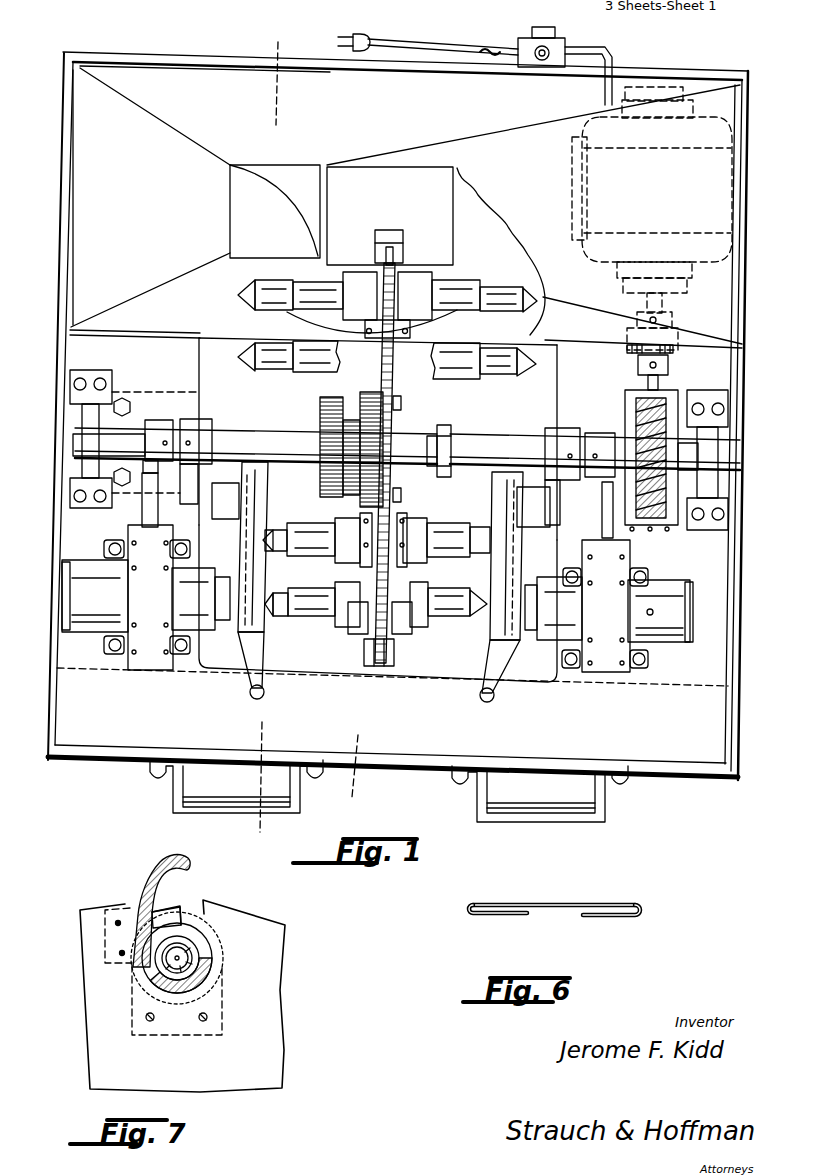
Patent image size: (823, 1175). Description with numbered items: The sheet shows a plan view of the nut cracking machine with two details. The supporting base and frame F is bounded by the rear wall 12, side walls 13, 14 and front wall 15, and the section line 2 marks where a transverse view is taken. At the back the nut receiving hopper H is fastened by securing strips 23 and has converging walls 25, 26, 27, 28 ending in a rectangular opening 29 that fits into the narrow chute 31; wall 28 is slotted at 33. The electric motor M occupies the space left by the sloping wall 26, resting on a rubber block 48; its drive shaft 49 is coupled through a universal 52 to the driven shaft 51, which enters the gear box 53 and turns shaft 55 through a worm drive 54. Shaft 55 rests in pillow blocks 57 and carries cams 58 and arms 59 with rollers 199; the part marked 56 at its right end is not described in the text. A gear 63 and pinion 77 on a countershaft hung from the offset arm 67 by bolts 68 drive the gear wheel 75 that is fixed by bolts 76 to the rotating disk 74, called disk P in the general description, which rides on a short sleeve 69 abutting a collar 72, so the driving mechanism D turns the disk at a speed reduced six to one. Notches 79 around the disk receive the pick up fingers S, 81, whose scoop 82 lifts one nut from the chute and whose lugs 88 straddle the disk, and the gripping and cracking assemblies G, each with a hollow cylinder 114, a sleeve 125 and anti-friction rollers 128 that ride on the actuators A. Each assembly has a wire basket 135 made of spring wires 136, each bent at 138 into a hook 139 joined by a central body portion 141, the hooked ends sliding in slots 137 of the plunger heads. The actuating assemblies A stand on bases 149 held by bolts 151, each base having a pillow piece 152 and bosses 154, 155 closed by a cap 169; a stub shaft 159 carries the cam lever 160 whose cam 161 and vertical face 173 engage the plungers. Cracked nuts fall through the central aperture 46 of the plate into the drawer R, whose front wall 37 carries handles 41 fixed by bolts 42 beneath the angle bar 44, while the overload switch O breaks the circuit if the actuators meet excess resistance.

In FIG. 1, the rear wall 12 is at (225, 60).
In FIG. 1, the side wall 13 is at (745, 337).
In FIG. 1, the side wall 14 is at (62, 338).
In FIG. 1, the front wall 15 is at (470, 761).
In FIG. 1, the supporting base and frame F is at (58, 188).
In FIG. 1, the section line 2- 2 is at (292, 45).
In FIG. 1, the securing strips 23 is at (198, 66).
In FIG. 1, the converging wall 25 is at (432, 116).
In FIG. 1, the converging wall 26 is at (537, 189).
In FIG. 1, the converging wall 27 is at (140, 200).
In FIG. 1, the converging wall 28 is at (195, 314).
In FIG. 1, the rectangular opening 29 is at (230, 234).
In FIG. 1, the chute 31 is at (305, 194).
In FIG. 1, the nut receiving hopper H is at (355, 117).
In FIG. 1, the electric motor M is at (620, 230).
In FIG. 1, the rubber block 48 is at (572, 226).
In FIG. 1, the drive shaft 49 is at (648, 303).
In FIG. 1, the overload switch O is at (568, 46).
In FIG. 1, the slot 33 is at (404, 254).
In FIG. 1, the pick up fingers S is at (386, 231).
In FIG. 1, the pick up fingers 81 is at (400, 244).
In FIG. 7, the pick up fingers 81 is at (165, 888).
In FIG. 1, the rotating disk 74 is at (385, 382).
In FIG. 7, the rotating disk 74 is at (288, 921).
In FIG. 1, the hollow cylinder 114 is at (318, 288).
In FIG. 7, the hollow cylinder 114 is at (192, 900).
In FIG. 1, the anti-friction rollers 128 is at (240, 303).
In FIG. 1, the sleeve 125 is at (510, 315).
In FIG. 1, the gripping and cracking assemblies G is at (268, 300).
In FIG. 1, the bolts 76 is at (398, 403).
In FIG. 1, the gear 63 is at (320, 474).
In FIG. 1, the pinion 77 is at (345, 440).
In FIG. 1, the gear wheel 75 is at (360, 393).
In FIG. 1, the rotating disk P is at (397, 420).
In FIG. 1, the offset arm 67 is at (252, 406).
In FIG. 1, the shaft 55 is at (506, 440).
In FIG. 1, the hopper R is at (220, 387).
In FIG. 1, the collar 72 is at (449, 435).
In FIG. 1, the short sleeve 69 is at (445, 478).
In FIG. 1, the driving mechanism D is at (534, 440).
In FIG. 1, the pillow block 57 is at (70, 404).
In FIG. 1, the bolts 68 is at (123, 398).
In FIG. 1, the cams 58 is at (157, 420).
In FIG. 1, the shaft journal 56 is at (85, 438).
In FIG. 1, the arms 59 is at (203, 478).
In FIG. 1, the roller 199 is at (224, 488).
In FIG. 1, the stub shaft 159 is at (226, 576).
In FIG. 1, the cam lever 160 is at (270, 640).
In FIG. 1, the cam 161 is at (246, 640).
In FIG. 1, the vertical face 173 is at (266, 565).
In FIG. 1, the central aperture 46 is at (314, 672).
In FIG. 1, the actuating means A is at (369, 625).
In FIG. 1, the bolts 151 is at (592, 568).
In FIG. 1, the bases 149 is at (104, 553).
In FIG. 1, the pillow pieces 152 is at (650, 659).
In FIG. 1, the boss 154 is at (64, 581).
In FIG. 1, the boss 155 is at (180, 592).
In FIG. 1, the closure plug or cap 169 is at (62, 600).
In FIG. 1, the gear box 53 is at (627, 425).
In FIG. 1, the universal 52 is at (628, 352).
In FIG. 1, the driven shaft 51 is at (668, 372).
In FIG. 1, the worm drive 54 is at (656, 530).
In FIG. 1, the handles 41 is at (198, 814).
In FIG. 1, the bolts 42 is at (157, 781).
In FIG. 1, the angle bar 44 is at (347, 775).
In FIG. 1, the front wall 37 is at (390, 770).
In FIG. 6, the central body portion 141 is at (548, 903).
In FIG. 6, the bend 138 is at (469, 908).
In FIG. 6, the spring wires 136 is at (593, 902).
In FIG. 6, the hook 139 is at (500, 916).
In FIG. 7, the notches 79 is at (210, 915).
In FIG. 7, the slots 137 is at (214, 968).
In FIG. 7, the scoop 82 is at (141, 841).
In FIG. 7, the lugs 88 is at (107, 908).
In FIG. 7, the wire basket 135 is at (170, 998).